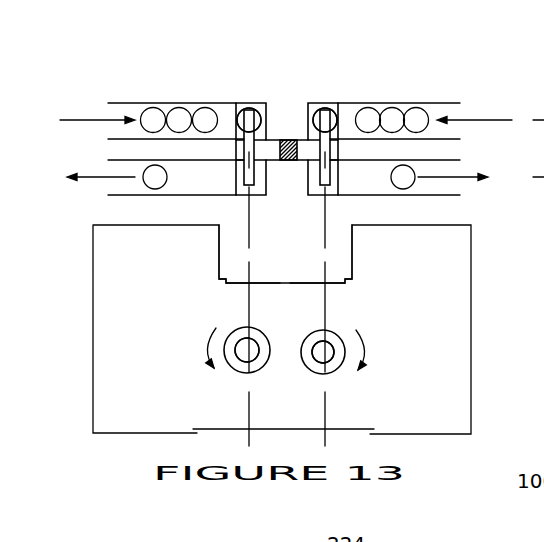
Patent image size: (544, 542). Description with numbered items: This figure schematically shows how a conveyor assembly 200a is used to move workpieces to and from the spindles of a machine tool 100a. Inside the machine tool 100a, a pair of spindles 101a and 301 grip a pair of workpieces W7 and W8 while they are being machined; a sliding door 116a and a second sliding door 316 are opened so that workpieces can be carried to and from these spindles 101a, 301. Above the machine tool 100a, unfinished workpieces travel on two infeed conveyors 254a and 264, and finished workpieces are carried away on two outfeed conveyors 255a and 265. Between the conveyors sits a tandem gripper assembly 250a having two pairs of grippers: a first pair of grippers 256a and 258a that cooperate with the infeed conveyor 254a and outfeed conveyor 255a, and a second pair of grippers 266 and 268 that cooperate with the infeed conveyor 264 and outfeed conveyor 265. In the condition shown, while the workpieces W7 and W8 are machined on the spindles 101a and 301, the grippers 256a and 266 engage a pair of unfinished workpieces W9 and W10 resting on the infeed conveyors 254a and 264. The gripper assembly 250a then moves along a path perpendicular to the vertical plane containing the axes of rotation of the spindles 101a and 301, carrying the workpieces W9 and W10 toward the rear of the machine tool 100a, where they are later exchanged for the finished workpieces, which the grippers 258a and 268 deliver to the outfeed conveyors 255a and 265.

The infeed conveyor 264 is at (132, 102).
The outfeed conveyor 265 is at (130, 194).
The gripper 266 is at (245, 121).
The gripper 268 is at (246, 181).
The workpiece W10 is at (243, 114).
The conveyor assembly 200a is at (290, 122).
The workpiece W9 is at (333, 114).
The gripper 256a is at (336, 117).
The infeed conveyor 254a is at (445, 110).
The outfeed conveyor 255a is at (432, 192).
The gripper assembly 250a is at (287, 174).
The gripper 258a is at (331, 176).
The second sliding door 316 is at (225, 283).
The sliding door 116a is at (340, 283).
The workpiece W8 is at (252, 348).
The workpiece W7 is at (326, 350).
The spindle 301 is at (237, 368).
The spindle 101a is at (334, 367).
The machine tool 100a is at (254, 356).